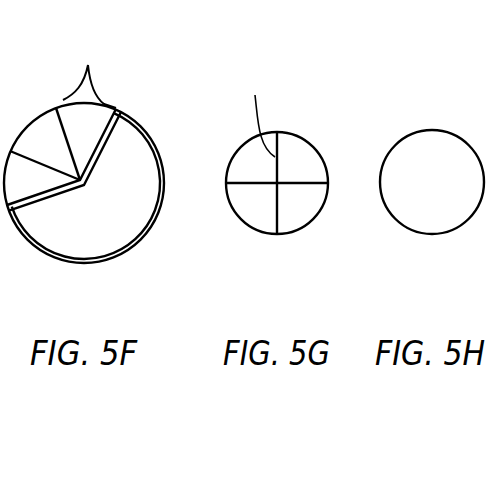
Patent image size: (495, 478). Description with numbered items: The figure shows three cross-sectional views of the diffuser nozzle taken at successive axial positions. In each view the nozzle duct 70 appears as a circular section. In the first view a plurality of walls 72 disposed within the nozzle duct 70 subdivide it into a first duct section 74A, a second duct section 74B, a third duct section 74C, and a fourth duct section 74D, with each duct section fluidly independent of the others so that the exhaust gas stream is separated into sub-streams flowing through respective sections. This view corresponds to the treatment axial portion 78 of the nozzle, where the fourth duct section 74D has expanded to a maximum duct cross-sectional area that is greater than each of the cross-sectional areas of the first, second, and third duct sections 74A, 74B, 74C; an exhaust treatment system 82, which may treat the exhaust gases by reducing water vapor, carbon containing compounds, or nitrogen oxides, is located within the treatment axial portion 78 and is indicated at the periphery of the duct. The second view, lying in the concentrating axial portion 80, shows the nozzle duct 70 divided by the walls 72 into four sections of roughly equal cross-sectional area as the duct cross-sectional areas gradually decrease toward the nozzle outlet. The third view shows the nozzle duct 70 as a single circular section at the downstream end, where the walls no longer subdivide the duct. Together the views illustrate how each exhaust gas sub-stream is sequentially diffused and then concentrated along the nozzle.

In FIG. 5F, the nozzle duct 70 is at (124, 138).
In FIG. 5G, the nozzle duct 70 is at (287, 128).
In FIG. 5H, the nozzle duct 70 is at (442, 127).
In FIG. 5F, the plurality of walls 72 is at (89, 73).
In FIG. 5G, the plurality of walls 72 is at (257, 113).
In FIG. 5F, the first duct section 74A is at (100, 131).
In FIG. 5G, the first duct section 74A is at (243, 150).
In FIG. 5F, the second duct section 74B is at (57, 151).
In FIG. 5G, the second duct section 74B is at (235, 207).
In FIG. 5F, the third duct section 74C is at (40, 188).
In FIG. 5G, the third duct section 74C is at (318, 204).
In FIG. 5F, the fourth duct section 74D is at (114, 229).
In FIG. 5G, the fourth duct section 74D is at (310, 148).
In FIG. 5F, the treatment axial portion 78 is at (119, 95).
In FIG. 5G, the concentrating axial portion 80 is at (314, 244).
In FIG. 5F, the exhaust treatment system 82 is at (94, 262).